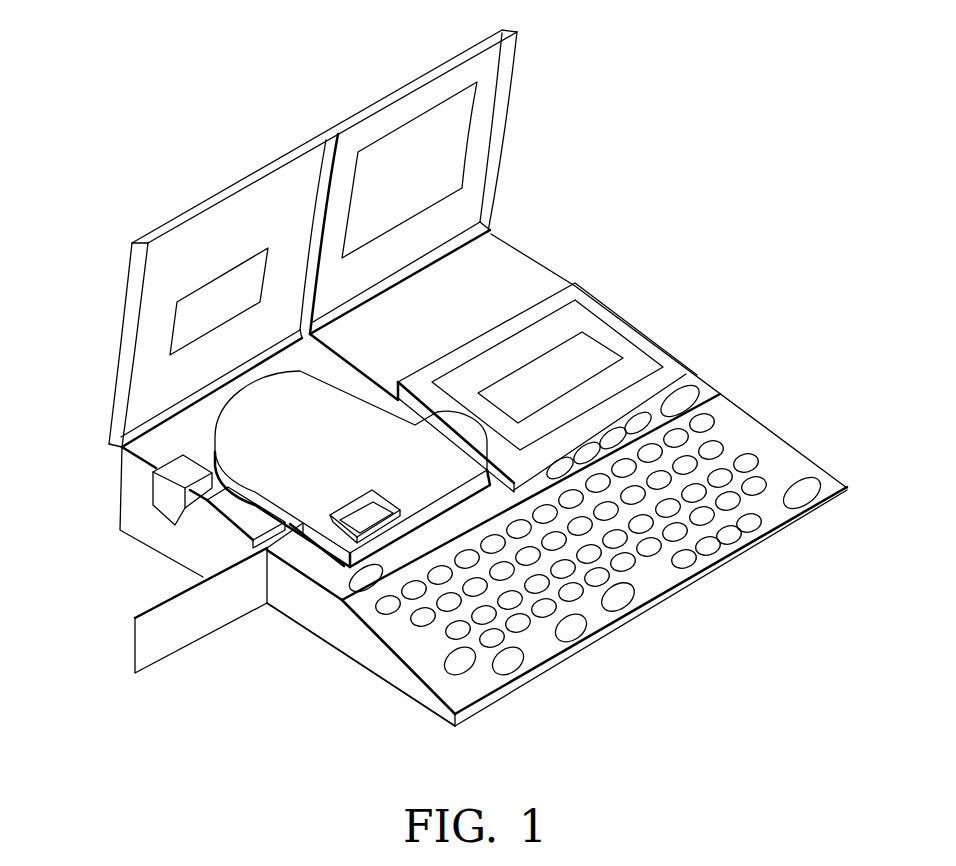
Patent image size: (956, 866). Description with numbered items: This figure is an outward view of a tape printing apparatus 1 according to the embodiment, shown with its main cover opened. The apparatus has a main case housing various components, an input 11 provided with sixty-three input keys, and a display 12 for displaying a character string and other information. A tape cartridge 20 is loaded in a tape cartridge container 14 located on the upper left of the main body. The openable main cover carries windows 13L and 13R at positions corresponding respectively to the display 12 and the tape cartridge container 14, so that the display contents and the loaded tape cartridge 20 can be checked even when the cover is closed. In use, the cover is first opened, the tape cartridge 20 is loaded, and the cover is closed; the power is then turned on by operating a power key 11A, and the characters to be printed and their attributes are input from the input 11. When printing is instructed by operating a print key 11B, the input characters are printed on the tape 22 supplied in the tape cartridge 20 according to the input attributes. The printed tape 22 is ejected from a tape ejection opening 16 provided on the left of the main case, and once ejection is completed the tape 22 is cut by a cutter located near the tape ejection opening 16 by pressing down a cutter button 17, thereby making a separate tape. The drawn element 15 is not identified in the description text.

The tape printing apparatus 1 is at (688, 197).
The input 11 is at (773, 452).
The power key 11A is at (686, 400).
The print key 11B is at (357, 592).
The display 12 is at (588, 360).
The window 13L is at (188, 318).
The window 13R is at (455, 145).
The tape cartridge container 14 is at (177, 432).
The switch 15 is at (363, 515).
The tape ejection opening 16 is at (262, 607).
The cutter button 17 is at (167, 510).
The tape cartridge 20 is at (318, 410).
The tape 22 is at (163, 642).